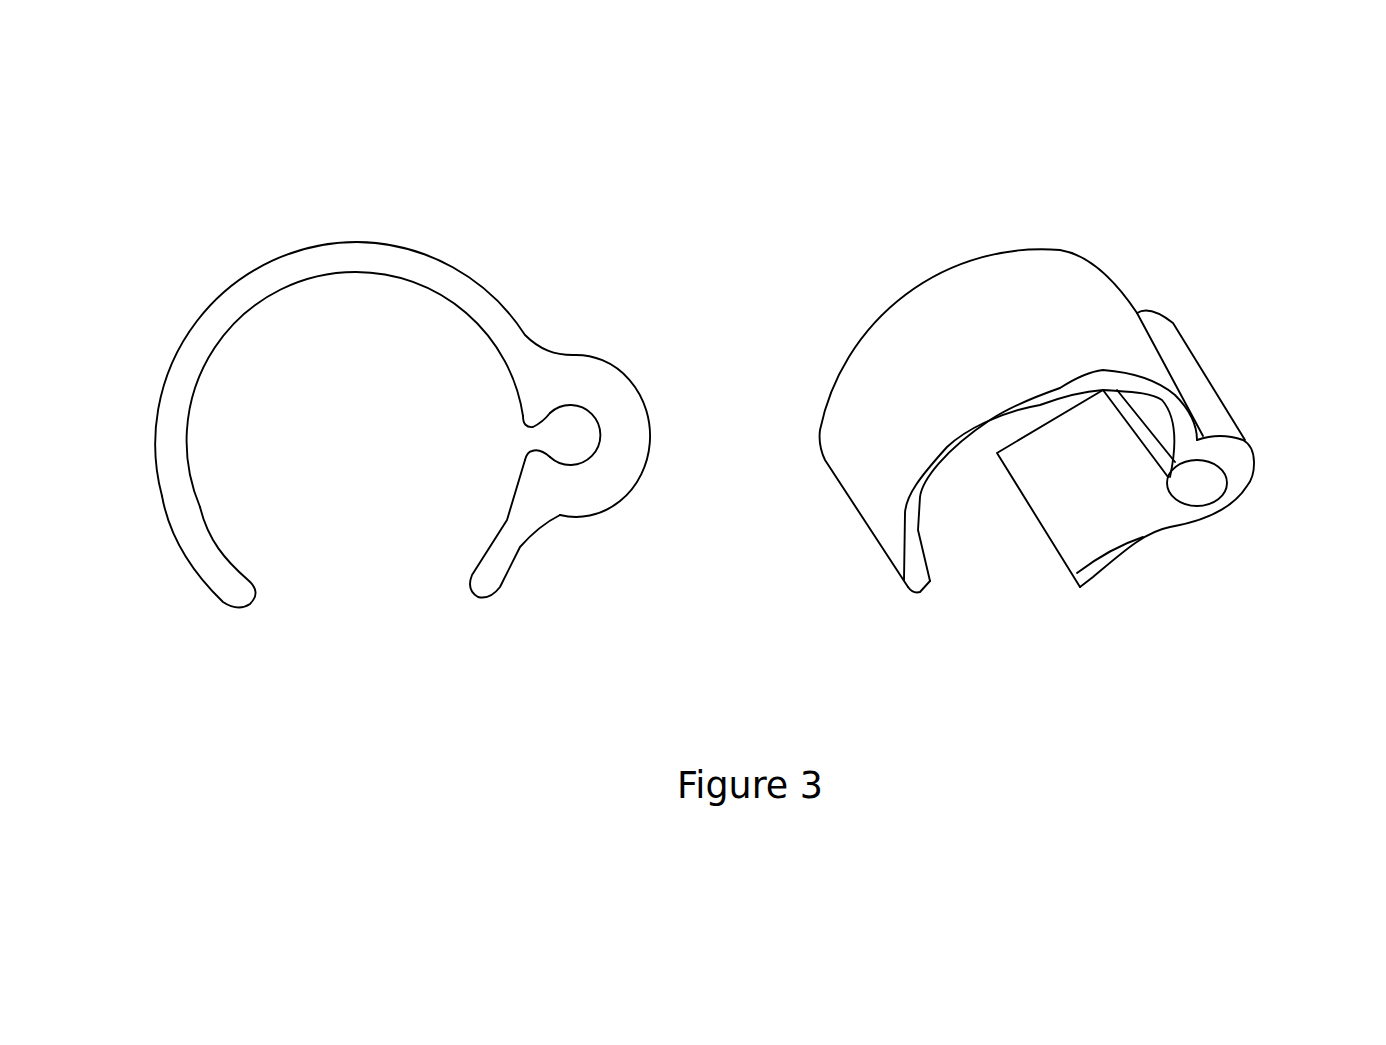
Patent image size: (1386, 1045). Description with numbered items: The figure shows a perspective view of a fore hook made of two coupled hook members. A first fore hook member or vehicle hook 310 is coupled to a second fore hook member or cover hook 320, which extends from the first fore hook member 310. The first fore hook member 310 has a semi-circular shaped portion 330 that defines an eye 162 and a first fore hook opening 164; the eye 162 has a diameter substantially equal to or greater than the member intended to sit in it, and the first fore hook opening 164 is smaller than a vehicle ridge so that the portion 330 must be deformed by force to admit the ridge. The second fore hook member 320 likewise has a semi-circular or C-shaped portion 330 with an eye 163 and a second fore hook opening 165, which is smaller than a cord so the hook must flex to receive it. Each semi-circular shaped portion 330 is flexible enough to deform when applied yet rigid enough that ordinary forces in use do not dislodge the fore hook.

The first fore hook member 310 is at (707, 427).
The semi-circular shaped portion 330 is at (734, 367).
The second fore hook member 320 is at (931, 427).
The eye 162 is at (777, 421).
The eye 163 is at (617, 379).
The first fore hook opening 164 is at (596, 604).
The second fore hook opening 165 is at (894, 455).